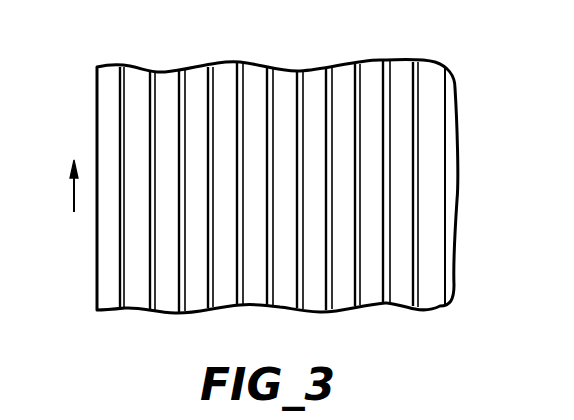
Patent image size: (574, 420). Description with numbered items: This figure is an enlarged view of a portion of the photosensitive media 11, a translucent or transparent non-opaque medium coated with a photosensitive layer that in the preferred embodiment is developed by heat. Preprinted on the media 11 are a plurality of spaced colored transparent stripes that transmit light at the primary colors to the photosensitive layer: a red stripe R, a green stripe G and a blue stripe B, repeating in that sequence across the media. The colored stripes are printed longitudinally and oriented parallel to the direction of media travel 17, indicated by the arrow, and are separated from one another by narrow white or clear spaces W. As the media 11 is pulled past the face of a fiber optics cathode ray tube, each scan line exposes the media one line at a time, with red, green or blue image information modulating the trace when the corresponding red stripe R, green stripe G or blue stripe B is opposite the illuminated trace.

The photosensitive media 11 is at (459, 189).
The direction of media travel 17 is at (71, 190).
The red stripe R is at (109, 74).
The green stripe G is at (139, 74).
The blue stripe B is at (168, 79).
The white or clear space W is at (122, 307).